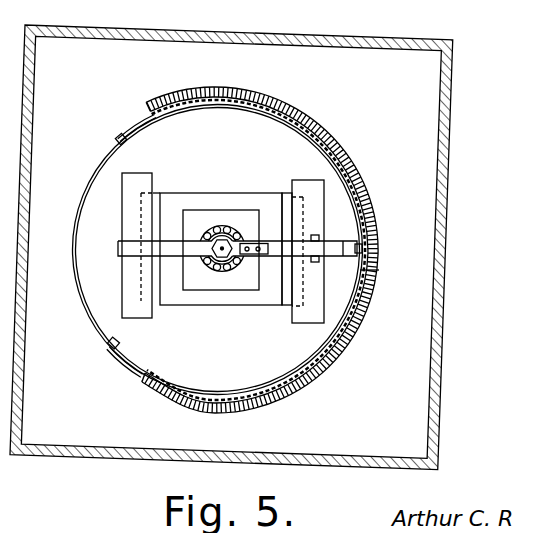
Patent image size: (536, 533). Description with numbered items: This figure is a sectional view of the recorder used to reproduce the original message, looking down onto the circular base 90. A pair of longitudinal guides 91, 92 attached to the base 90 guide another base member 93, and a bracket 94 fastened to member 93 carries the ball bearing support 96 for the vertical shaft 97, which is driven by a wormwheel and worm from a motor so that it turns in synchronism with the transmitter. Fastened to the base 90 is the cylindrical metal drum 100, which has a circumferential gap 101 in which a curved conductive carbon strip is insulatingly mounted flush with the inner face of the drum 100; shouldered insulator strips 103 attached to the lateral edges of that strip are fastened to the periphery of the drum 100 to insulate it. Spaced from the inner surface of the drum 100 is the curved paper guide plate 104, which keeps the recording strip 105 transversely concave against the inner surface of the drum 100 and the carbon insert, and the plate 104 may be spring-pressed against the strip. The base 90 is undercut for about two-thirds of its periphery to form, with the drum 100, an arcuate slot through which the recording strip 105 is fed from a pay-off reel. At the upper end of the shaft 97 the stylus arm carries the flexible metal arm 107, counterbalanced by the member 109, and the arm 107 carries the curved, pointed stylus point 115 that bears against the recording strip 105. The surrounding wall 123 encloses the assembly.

The circular base 90 is at (172, 346).
The longitudinal guide 91 is at (137, 202).
The longitudinal guide 92 is at (315, 203).
The base member 93 is at (287, 297).
The bracket 94 is at (253, 298).
The ball bearing support 96 is at (197, 213).
The shaft 97 is at (222, 246).
The cylindrical metal drum 100 is at (100, 160).
The circumferential gap 101 is at (147, 112).
The shouldered insulator strip 103 is at (361, 171).
The curved paper guide plate 104 is at (340, 175).
The recording strip 105 is at (363, 270).
The flexible metal arm 107 is at (272, 242).
The counterbalance member 109 is at (130, 248).
The stylus point 115 is at (356, 247).
The housing wall 123 is at (446, 185).